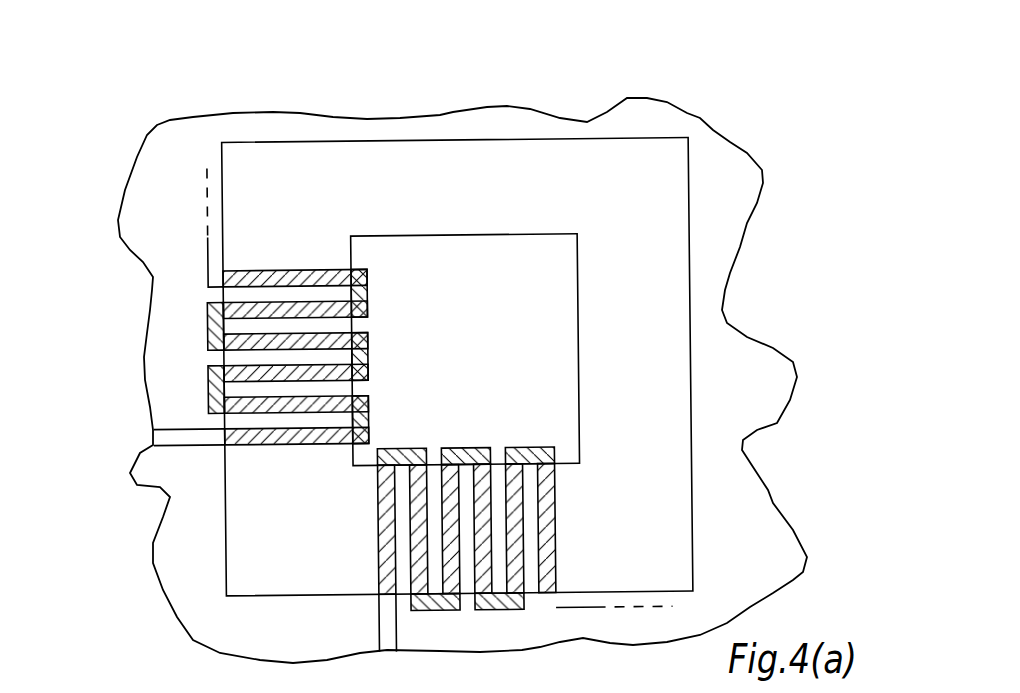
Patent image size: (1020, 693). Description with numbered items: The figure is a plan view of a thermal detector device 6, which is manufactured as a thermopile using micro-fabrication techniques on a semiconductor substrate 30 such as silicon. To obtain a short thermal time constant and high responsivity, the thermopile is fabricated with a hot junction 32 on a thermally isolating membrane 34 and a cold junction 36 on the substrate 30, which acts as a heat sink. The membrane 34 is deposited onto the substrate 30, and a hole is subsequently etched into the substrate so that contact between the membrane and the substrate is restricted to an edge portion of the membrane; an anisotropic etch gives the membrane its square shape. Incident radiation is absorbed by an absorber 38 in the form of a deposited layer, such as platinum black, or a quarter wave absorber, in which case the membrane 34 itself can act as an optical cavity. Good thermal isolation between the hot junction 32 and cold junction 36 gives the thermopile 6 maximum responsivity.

The thermal detector device 6 is at (735, 290).
The semiconductor substrate 30 is at (695, 195).
The hot junction 32 is at (371, 266).
The thermally isolating membrane 34 is at (513, 529).
The cold junction 36 is at (206, 328).
The absorber 38 is at (564, 233).